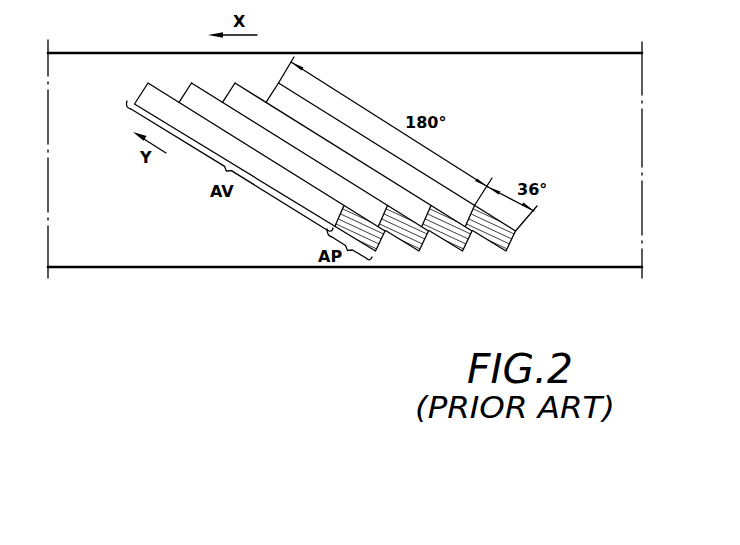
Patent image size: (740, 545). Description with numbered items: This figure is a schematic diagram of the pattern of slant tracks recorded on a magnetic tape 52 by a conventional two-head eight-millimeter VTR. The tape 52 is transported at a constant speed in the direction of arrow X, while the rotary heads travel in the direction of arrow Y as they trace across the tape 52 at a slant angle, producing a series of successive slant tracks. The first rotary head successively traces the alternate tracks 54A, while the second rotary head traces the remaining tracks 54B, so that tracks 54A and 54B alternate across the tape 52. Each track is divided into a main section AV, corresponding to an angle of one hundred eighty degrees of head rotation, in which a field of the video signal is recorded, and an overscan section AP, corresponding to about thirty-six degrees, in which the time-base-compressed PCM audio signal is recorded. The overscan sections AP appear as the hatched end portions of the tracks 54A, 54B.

The magnetic tape 52 is at (600, 250).
The alternate tracks 54A is at (376, 251).
The remaining tracks 54B is at (426, 249).